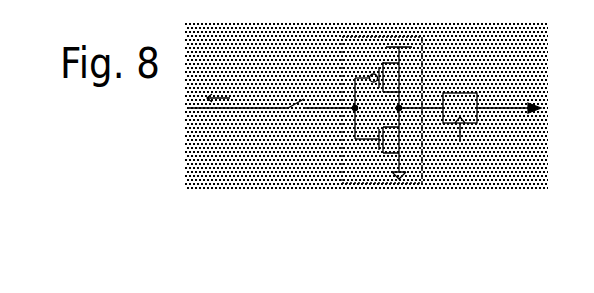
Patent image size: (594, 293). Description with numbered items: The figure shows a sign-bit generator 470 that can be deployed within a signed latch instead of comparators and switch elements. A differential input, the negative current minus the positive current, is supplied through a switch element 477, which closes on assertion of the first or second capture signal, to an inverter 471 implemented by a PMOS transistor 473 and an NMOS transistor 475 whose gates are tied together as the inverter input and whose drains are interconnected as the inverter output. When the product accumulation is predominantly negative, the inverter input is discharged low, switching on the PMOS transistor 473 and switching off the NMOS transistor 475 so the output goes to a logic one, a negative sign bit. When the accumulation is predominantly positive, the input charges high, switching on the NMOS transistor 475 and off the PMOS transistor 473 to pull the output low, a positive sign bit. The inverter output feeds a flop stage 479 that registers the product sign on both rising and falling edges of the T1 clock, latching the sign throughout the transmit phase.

The sign-bit generator 470 is at (273, 164).
The inverter 471 is at (341, 64).
The PMOS transistor 473 is at (386, 77).
The NMOS transistor 475 is at (386, 140).
The switch element 477 is at (293, 105).
The flop stage 479 is at (480, 116).